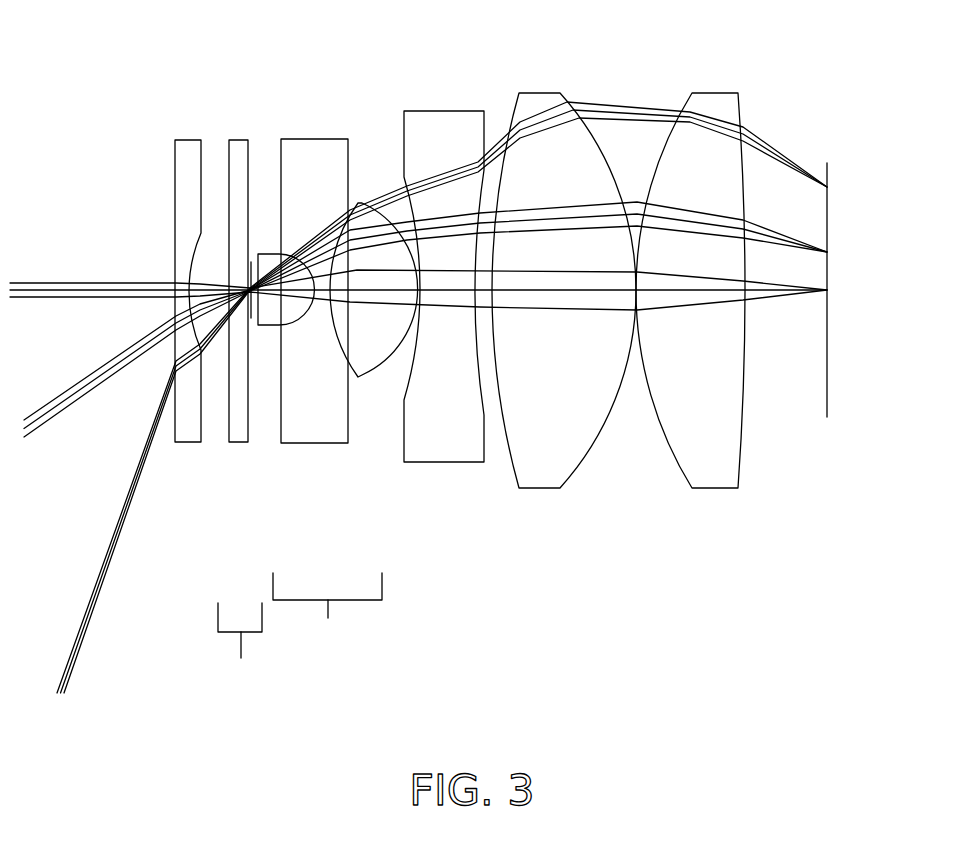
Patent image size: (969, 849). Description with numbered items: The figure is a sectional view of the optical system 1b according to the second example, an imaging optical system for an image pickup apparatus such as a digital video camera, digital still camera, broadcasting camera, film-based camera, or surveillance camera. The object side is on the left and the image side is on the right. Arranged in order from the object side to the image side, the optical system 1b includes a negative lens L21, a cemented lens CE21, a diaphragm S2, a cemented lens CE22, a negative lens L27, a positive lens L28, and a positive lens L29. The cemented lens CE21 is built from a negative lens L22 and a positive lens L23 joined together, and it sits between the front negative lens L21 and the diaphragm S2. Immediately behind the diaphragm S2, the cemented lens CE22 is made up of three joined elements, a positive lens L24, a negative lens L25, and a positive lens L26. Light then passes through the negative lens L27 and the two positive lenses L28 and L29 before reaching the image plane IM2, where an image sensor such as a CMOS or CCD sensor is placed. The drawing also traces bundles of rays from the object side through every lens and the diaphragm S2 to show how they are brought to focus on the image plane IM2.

The optical system 1b is at (852, 31).
The negative lens L21 is at (185, 143).
The negative lens L22 is at (234, 138).
The positive lens L23 is at (248, 283).
The positive lens L24 is at (271, 316).
The negative lens L25 is at (318, 138).
The positive lens L26 is at (367, 348).
The negative lens L27 is at (460, 111).
The positive lens L28 is at (560, 93).
The positive lens L29 is at (714, 103).
The diaphragm S2 is at (215, 446).
The image plane IM2 is at (827, 370).
The cemented lens CE21 is at (248, 654).
The cemented lens CE22 is at (327, 619).